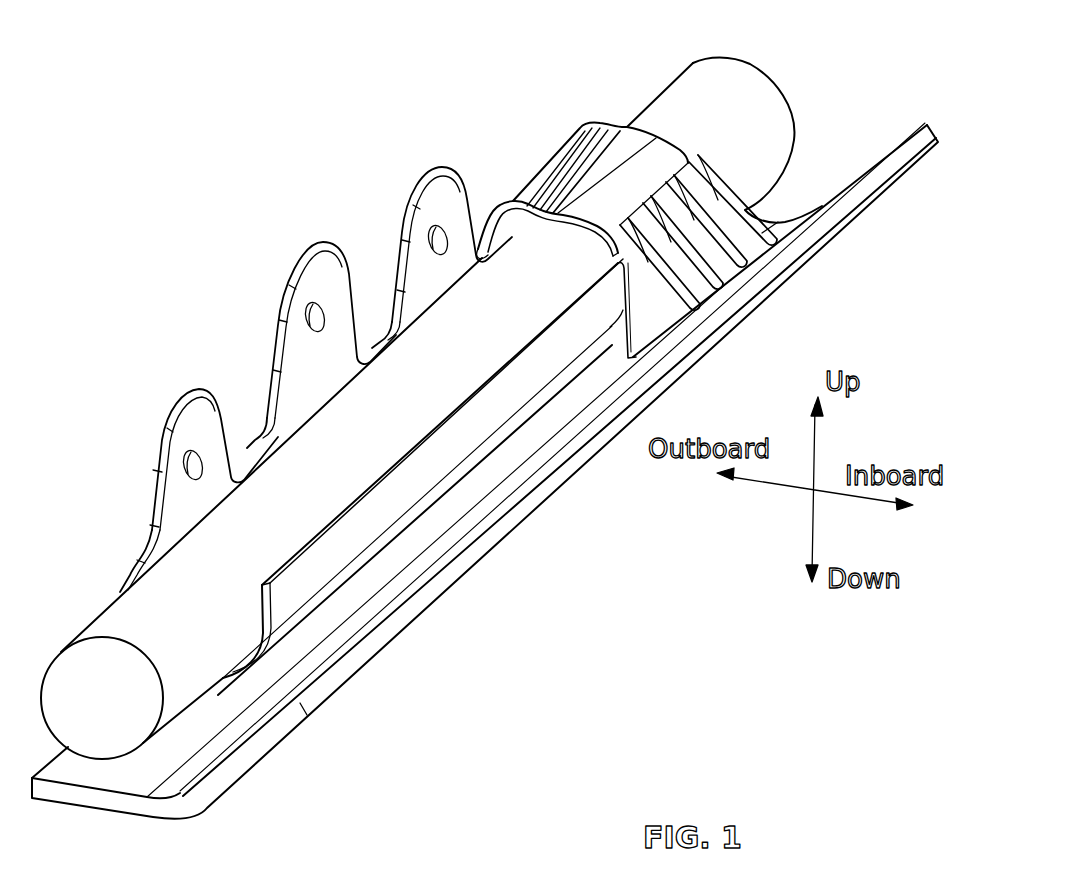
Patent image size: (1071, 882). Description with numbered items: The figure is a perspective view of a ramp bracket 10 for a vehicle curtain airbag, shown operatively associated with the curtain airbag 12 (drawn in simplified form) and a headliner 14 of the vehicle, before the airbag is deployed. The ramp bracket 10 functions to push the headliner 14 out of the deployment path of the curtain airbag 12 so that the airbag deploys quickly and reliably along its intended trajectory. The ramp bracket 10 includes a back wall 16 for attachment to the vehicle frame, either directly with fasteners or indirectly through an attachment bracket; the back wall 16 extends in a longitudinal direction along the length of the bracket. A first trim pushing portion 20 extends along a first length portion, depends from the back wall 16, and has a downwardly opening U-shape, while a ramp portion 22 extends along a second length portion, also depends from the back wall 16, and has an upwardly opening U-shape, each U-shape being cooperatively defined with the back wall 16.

The ramp bracket 10 is at (160, 446).
The curtain airbag 12 is at (740, 83).
The headliner 14 is at (918, 148).
The back wall 16 is at (378, 340).
The first trim pushing portion 20 is at (652, 167).
The ramp portion 22 is at (400, 490).